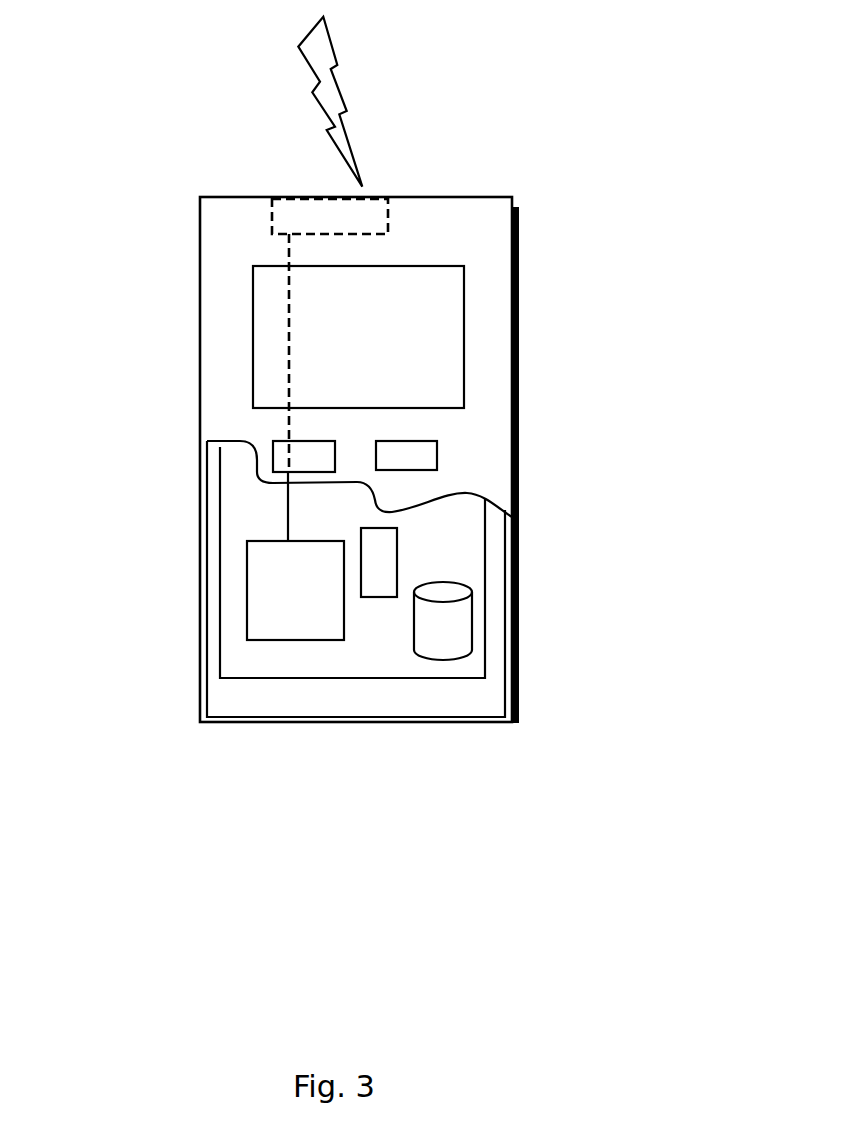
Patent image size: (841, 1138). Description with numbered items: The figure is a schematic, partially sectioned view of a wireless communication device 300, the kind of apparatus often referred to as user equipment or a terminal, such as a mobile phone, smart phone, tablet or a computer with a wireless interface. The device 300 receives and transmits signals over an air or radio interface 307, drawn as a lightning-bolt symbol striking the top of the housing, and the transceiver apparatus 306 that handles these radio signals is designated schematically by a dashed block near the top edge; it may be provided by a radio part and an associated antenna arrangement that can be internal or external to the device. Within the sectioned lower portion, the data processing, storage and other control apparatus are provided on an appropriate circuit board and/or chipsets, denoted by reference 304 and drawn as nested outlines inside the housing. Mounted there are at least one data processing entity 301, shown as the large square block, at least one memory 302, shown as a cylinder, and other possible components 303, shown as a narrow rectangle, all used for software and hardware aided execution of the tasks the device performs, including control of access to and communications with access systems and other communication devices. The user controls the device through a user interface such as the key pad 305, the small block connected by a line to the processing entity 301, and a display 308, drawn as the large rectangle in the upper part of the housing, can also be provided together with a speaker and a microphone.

The communication device 300 is at (202, 240).
The data processing entity 301 is at (253, 573).
The memory 302 is at (437, 633).
The other components 303 is at (380, 545).
The circuit board 304 is at (247, 660).
The key pad 305 is at (280, 457).
The transceiver apparatus 306 is at (375, 211).
The air or radio interface 307 is at (361, 128).
The display 308 is at (270, 323).